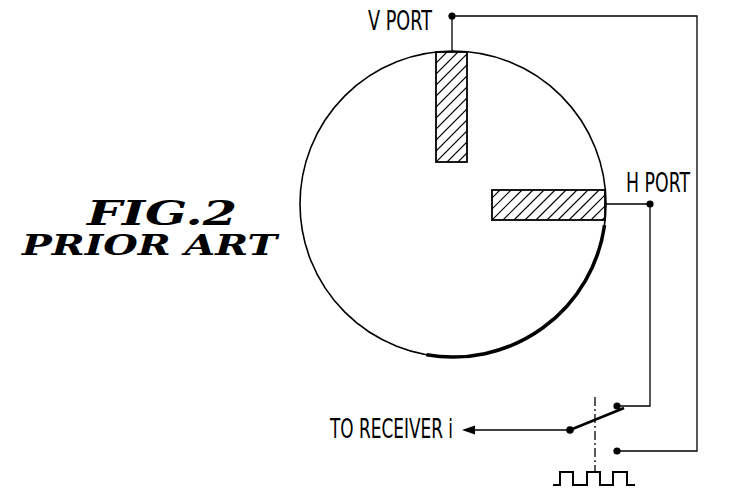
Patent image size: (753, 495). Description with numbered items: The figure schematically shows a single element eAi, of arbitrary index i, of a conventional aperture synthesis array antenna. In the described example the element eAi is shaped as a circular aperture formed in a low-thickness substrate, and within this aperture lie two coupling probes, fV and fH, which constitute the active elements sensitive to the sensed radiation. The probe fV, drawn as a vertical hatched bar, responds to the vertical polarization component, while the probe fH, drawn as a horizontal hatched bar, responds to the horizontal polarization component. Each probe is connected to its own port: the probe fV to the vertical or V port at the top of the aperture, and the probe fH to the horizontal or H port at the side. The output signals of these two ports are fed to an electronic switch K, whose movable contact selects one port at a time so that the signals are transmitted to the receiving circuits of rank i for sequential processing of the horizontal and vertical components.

The element of a conventional aperture synthesis array antenna eAi is at (325, 289).
The coupling probe for vertical polarization fV is at (458, 135).
The coupling probe for horizontal polarization fH is at (518, 211).
The electronic switch K is at (543, 431).